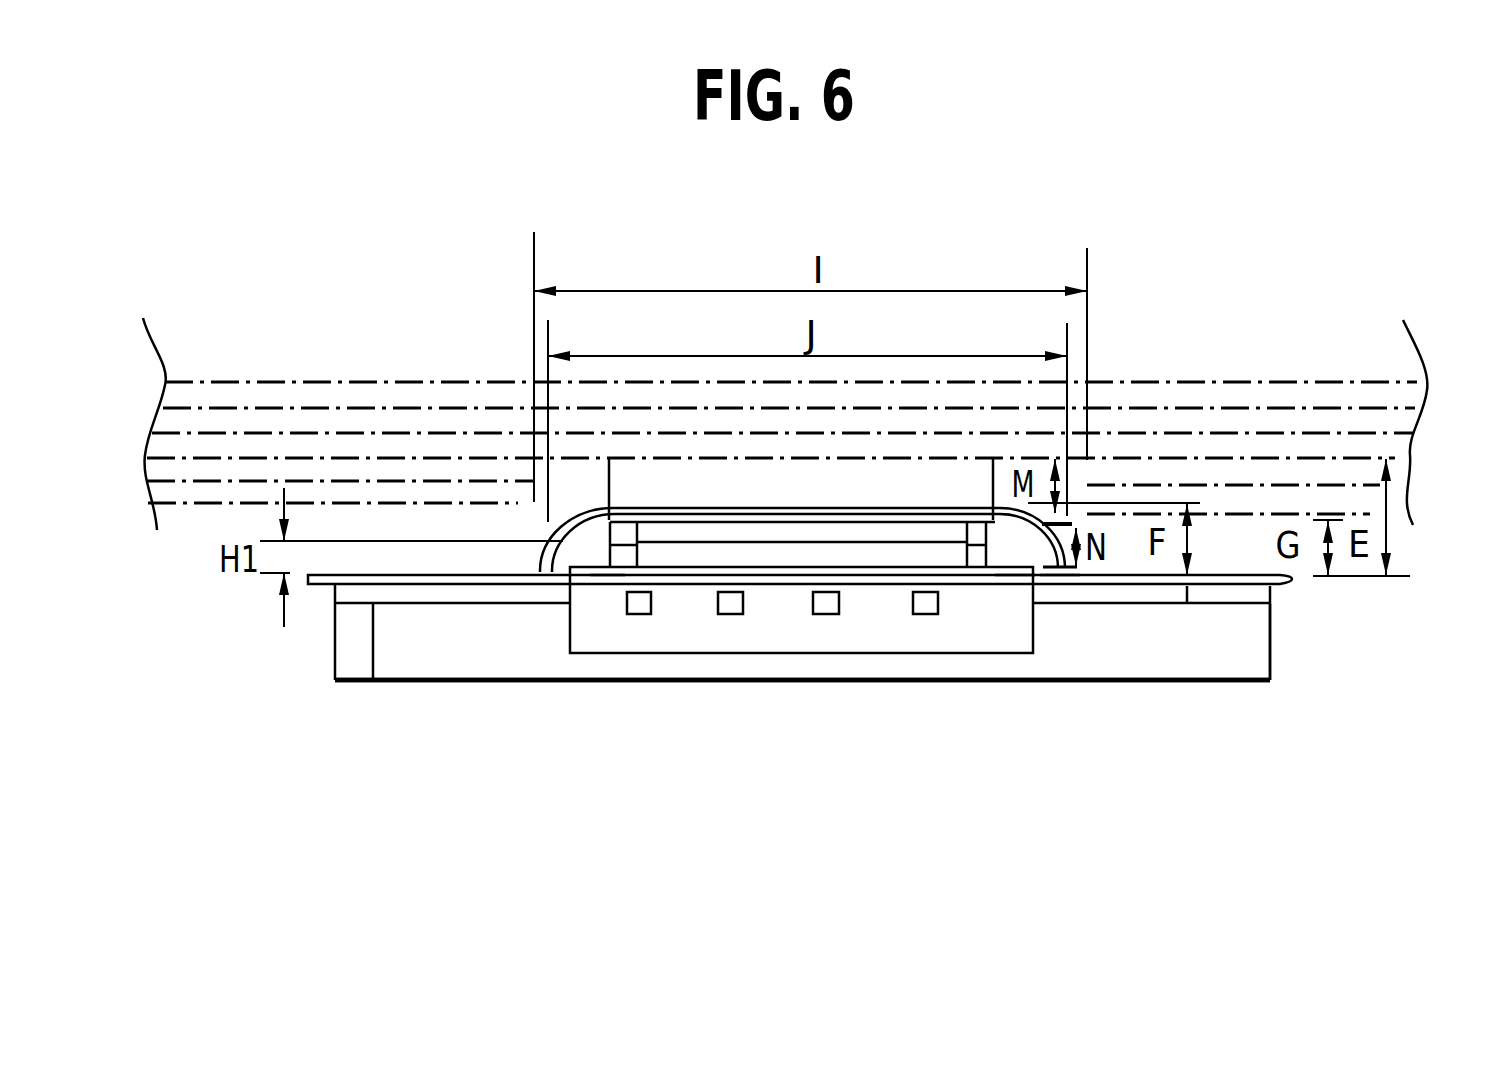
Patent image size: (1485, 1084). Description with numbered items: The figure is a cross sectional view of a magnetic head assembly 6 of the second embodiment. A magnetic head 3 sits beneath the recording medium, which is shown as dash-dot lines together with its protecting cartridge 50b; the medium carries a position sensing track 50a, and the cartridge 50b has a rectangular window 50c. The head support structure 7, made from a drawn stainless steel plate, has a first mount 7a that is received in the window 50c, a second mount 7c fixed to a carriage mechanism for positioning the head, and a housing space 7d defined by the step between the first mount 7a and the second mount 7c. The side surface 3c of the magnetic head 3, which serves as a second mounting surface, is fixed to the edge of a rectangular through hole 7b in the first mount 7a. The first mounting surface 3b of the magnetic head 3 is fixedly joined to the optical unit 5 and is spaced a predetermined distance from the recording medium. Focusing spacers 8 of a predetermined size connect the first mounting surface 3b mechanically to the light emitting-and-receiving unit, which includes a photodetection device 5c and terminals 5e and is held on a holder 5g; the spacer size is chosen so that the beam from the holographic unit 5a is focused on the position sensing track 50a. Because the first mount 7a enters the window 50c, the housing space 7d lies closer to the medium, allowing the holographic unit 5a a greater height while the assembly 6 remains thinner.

The magnetic head 3 is at (609, 484).
The first mounting surface 3b is at (897, 523).
The side surface 3c is at (853, 518).
The optical unit 5 is at (442, 662).
The holographic unit 5a is at (772, 558).
The photodetection device 5c is at (1188, 447).
The terminals 5e is at (630, 613).
The holder 5g is at (1262, 650).
The magnetic head assembly 6 is at (335, 688).
The head support structure 7 is at (1292, 585).
The first mount 7a is at (1063, 572).
The rectangular through hole 7b is at (605, 520).
The second mount 7c is at (1182, 600).
The housing space 7d is at (1013, 550).
The focusing spacers 8 is at (617, 548).
The position sensing track 50a is at (162, 478).
The cartridge 50b is at (198, 507).
The window 50c is at (543, 510).